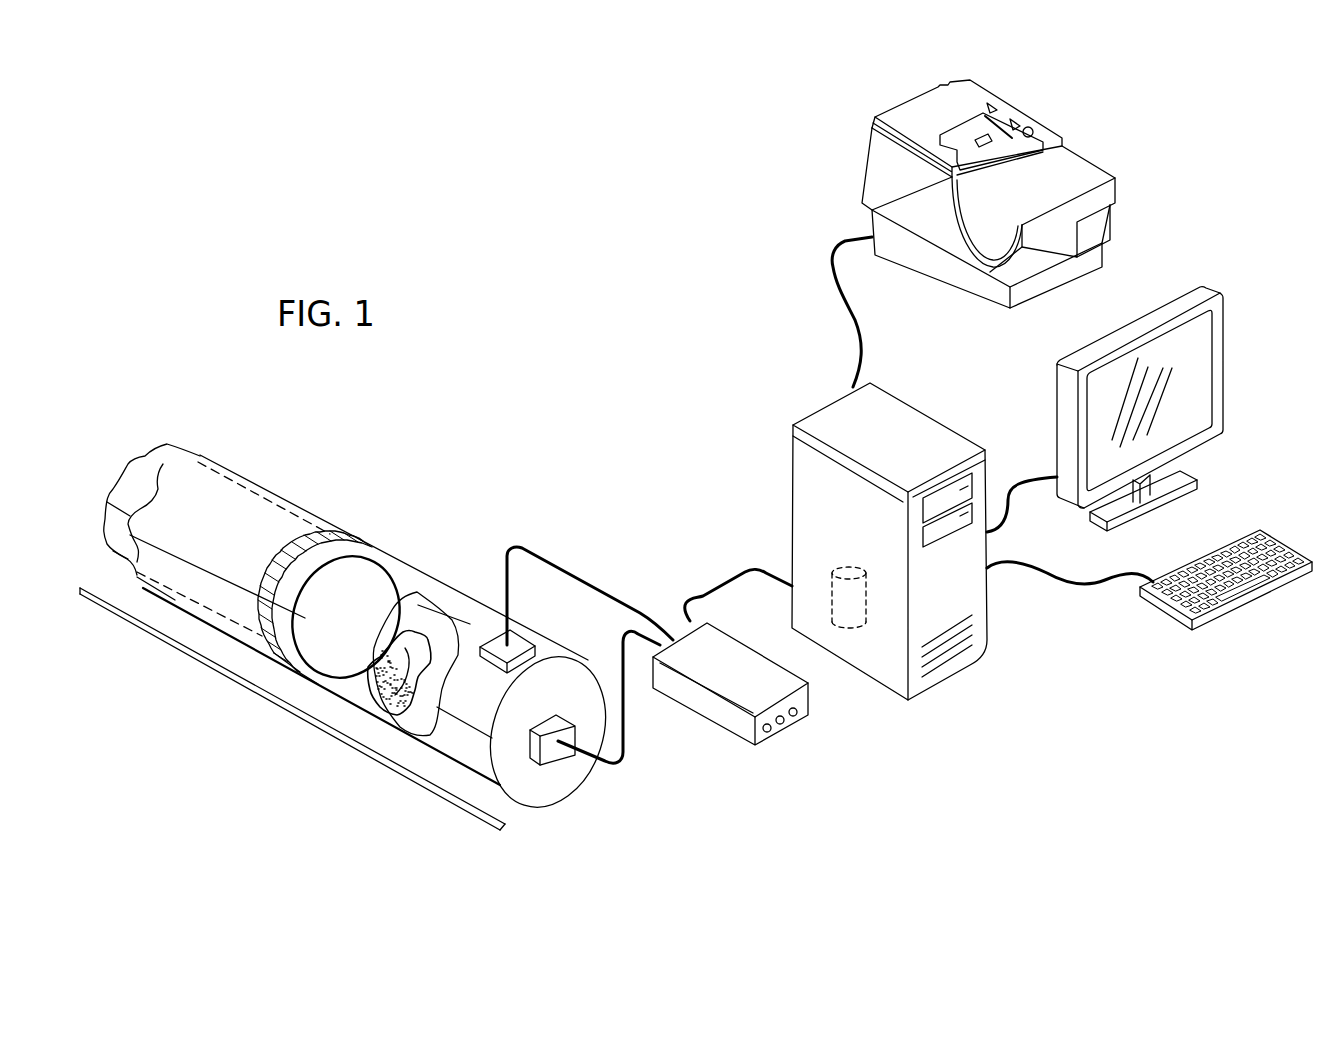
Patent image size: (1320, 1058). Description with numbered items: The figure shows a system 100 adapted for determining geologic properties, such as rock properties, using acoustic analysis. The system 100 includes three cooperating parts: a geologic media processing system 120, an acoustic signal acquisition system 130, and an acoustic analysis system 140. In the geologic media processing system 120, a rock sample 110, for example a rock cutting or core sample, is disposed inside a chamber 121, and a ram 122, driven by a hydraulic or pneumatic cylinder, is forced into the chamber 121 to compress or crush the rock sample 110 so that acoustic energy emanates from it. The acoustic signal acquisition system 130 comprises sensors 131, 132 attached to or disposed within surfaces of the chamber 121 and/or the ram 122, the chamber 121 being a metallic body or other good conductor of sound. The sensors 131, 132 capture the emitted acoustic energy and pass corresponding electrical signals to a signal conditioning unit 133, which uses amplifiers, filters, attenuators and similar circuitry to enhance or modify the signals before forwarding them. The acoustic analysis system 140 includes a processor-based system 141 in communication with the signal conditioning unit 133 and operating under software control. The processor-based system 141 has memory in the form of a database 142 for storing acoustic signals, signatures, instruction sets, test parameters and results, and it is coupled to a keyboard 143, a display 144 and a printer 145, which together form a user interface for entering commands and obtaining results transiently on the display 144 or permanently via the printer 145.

The system 100 is at (526, 231).
The rock sample 110 is at (415, 600).
The geologic media processing system 120 is at (302, 713).
The chamber 121 is at (267, 482).
The ram 122 is at (345, 550).
The acoustic signal acquisition system 130 is at (732, 717).
The sensor 131 is at (520, 642).
The sensor 132 is at (560, 757).
The signal conditioning unit 133 is at (785, 731).
The acoustic analysis system 140 is at (1057, 688).
The processor-based system 141 is at (927, 414).
The database 142 is at (844, 566).
The keyboard 143 is at (1252, 603).
The display 144 is at (1228, 365).
The printer 145 is at (1012, 108).